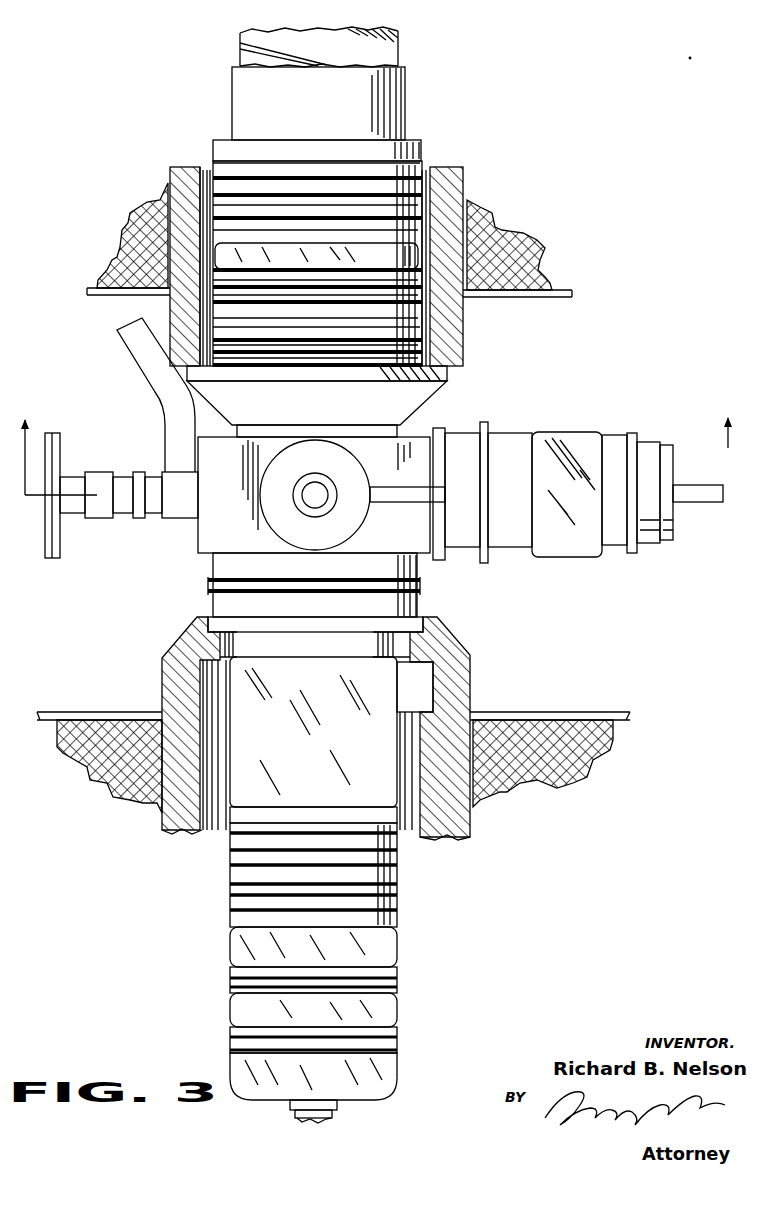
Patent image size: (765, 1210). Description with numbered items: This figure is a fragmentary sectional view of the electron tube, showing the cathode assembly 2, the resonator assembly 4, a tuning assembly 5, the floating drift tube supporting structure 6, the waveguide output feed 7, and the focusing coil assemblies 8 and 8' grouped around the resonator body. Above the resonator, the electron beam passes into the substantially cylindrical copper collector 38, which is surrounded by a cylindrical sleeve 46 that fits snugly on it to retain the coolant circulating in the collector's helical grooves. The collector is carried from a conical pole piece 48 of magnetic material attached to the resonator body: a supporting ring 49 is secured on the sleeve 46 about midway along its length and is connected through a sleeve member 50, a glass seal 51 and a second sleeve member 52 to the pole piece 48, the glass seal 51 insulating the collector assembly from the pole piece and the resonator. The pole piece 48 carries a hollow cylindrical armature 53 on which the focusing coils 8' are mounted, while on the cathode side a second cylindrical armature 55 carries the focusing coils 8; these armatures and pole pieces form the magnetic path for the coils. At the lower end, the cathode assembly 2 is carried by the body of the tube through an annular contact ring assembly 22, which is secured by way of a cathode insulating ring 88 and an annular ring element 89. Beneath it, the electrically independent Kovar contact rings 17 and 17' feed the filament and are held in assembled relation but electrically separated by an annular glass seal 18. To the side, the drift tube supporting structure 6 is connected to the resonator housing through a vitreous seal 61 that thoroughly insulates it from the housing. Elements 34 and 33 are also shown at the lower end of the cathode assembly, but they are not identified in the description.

The collector 38 is at (382, 57).
The cylindrical sleeve 46 is at (242, 92).
The supporting ring 49 is at (213, 147).
The sleeve member 50 is at (242, 212).
The glass seal 51 is at (227, 258).
The sleeve member 52 is at (410, 327).
The hollow cylindrical armature 53 is at (450, 210).
The focusing coil assembly 8' is at (329, 240).
The conical pole piece 48 is at (337, 409).
The resonator assembly 4 is at (430, 417).
The tuning assembly 5 is at (277, 527).
The waveguide output feed 7 is at (84, 446).
The vitreous seal 61 is at (568, 440).
The floating drift tube supporting structure 6 is at (650, 545).
The annular ring element 89 is at (395, 643).
The cylindrical armature 55 is at (470, 688).
The focusing coil assembly 8 is at (333, 746).
The cathode insulating ring 88 is at (345, 716).
The annular contact ring assembly 22 is at (230, 910).
The cathode assembly 2 is at (404, 870).
The annular contact ring 17' is at (282, 979).
The annular glass seal 18 is at (230, 1010).
The annular contact ring 17 is at (281, 1038).
The end cap 34 is at (383, 1067).
The nipple 33 is at (330, 1113).